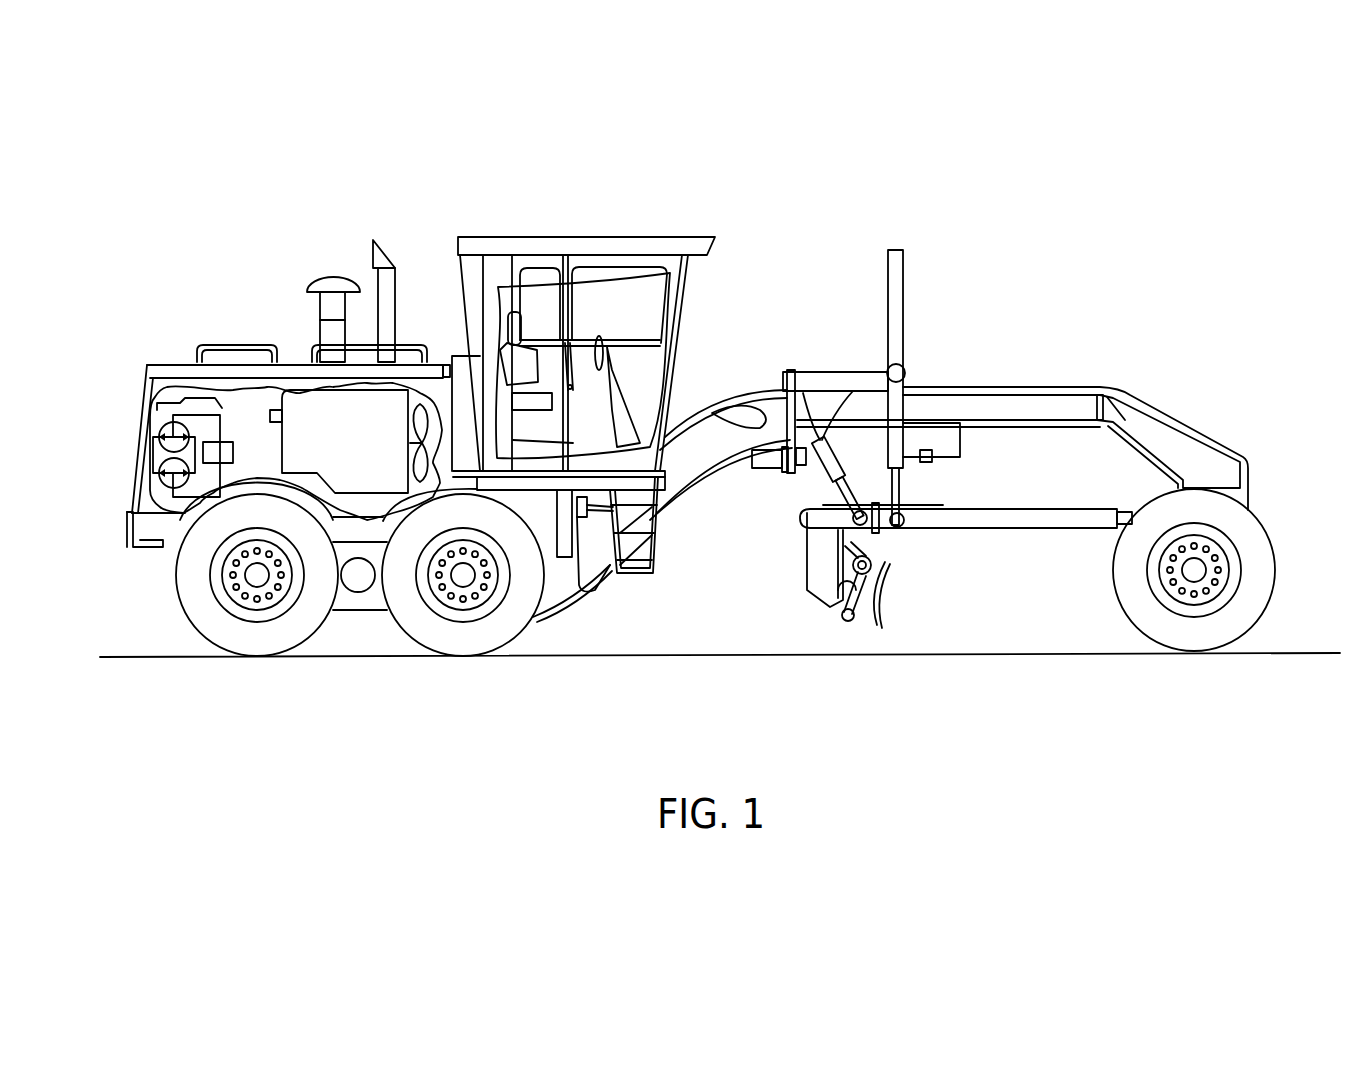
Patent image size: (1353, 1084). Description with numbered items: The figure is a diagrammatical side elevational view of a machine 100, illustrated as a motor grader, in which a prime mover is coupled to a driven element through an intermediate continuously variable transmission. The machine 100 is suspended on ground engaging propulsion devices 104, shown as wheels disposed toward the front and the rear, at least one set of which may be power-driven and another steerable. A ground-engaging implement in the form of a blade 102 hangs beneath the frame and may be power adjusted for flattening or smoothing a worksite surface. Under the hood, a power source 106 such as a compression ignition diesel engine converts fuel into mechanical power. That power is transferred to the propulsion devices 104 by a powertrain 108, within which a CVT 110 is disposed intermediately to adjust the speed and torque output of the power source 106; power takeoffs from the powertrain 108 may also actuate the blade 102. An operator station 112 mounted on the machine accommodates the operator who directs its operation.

The machine 100 is at (743, 234).
The blade 102 is at (880, 590).
The propulsion devices 104 is at (458, 633).
The power source 106 is at (322, 410).
The powertrain 108 is at (189, 403).
The CVT 110 is at (155, 450).
The operator station 112 is at (570, 242).